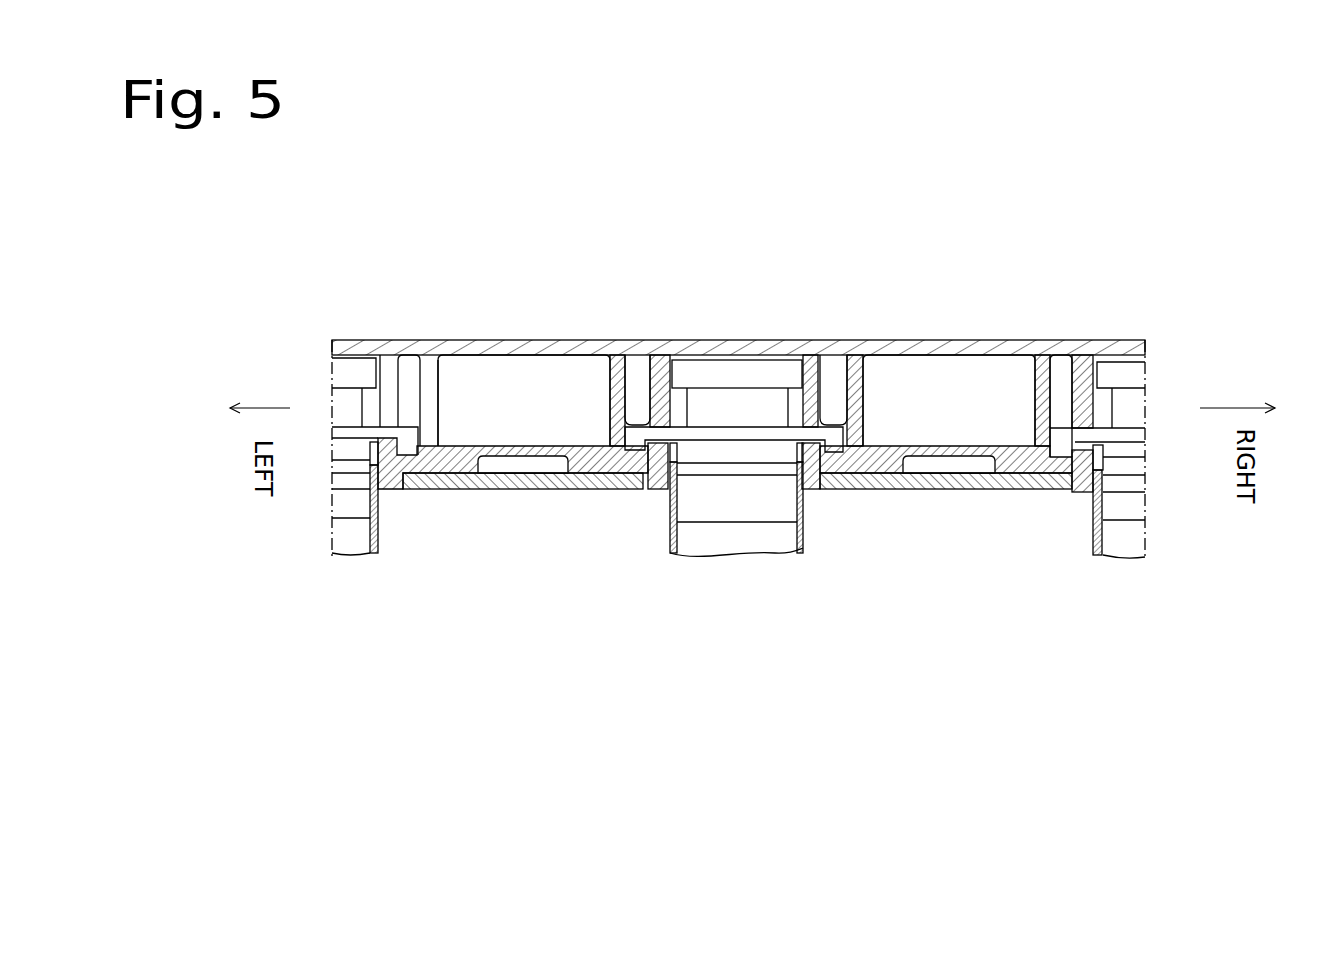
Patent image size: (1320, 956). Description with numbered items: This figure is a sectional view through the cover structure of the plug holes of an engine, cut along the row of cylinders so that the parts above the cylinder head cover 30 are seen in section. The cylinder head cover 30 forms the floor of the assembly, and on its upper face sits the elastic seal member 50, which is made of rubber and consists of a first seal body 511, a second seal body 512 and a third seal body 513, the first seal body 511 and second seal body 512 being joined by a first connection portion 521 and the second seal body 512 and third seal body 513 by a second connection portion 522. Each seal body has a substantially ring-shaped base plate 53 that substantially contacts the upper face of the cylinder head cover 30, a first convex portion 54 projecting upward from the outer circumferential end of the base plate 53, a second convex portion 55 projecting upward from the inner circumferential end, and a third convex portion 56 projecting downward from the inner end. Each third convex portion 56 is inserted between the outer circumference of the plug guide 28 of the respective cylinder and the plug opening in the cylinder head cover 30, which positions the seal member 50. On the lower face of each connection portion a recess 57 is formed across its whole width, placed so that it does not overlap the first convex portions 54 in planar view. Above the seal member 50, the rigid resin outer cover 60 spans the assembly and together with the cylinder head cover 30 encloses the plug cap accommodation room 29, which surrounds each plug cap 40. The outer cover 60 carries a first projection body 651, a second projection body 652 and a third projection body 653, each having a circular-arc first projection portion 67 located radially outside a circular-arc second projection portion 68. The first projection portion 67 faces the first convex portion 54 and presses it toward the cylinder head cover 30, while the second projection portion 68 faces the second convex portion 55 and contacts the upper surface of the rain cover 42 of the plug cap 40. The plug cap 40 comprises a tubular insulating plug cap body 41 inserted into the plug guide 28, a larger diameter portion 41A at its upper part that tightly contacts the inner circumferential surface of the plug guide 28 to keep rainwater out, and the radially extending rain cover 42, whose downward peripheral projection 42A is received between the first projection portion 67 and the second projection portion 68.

The plug guide 28 is at (800, 543).
The plug cap accommodation room 29 is at (537, 399).
The cylinder head cover 30 is at (440, 490).
The plug cap 40 is at (350, 372).
The plug cap body 41 is at (700, 543).
The larger diameter portion 41A is at (753, 483).
The rain cover 42 is at (852, 493).
The peripheral projection 42A is at (642, 478).
The seal member 50 is at (880, 437).
The base plate 53 is at (1005, 593).
The first convex portion 54 is at (1033, 442).
The second convex portion 55 is at (1095, 452).
The third convex portion 56 is at (1083, 493).
The recess 57 is at (520, 463).
The outer cover 60 is at (410, 328).
The first projection portion 67 is at (575, 452).
The second projection portion 68 is at (600, 468).
The first seal body 511 is at (1137, 517).
The second seal body 512 is at (667, 553).
The third seal body 513 is at (370, 457).
The first connection portion 521 is at (933, 445).
The second connection portion 522 is at (555, 445).
The first projection body 651 is at (1028, 382).
The second projection body 652 is at (855, 425).
The third projection body 653 is at (450, 388).